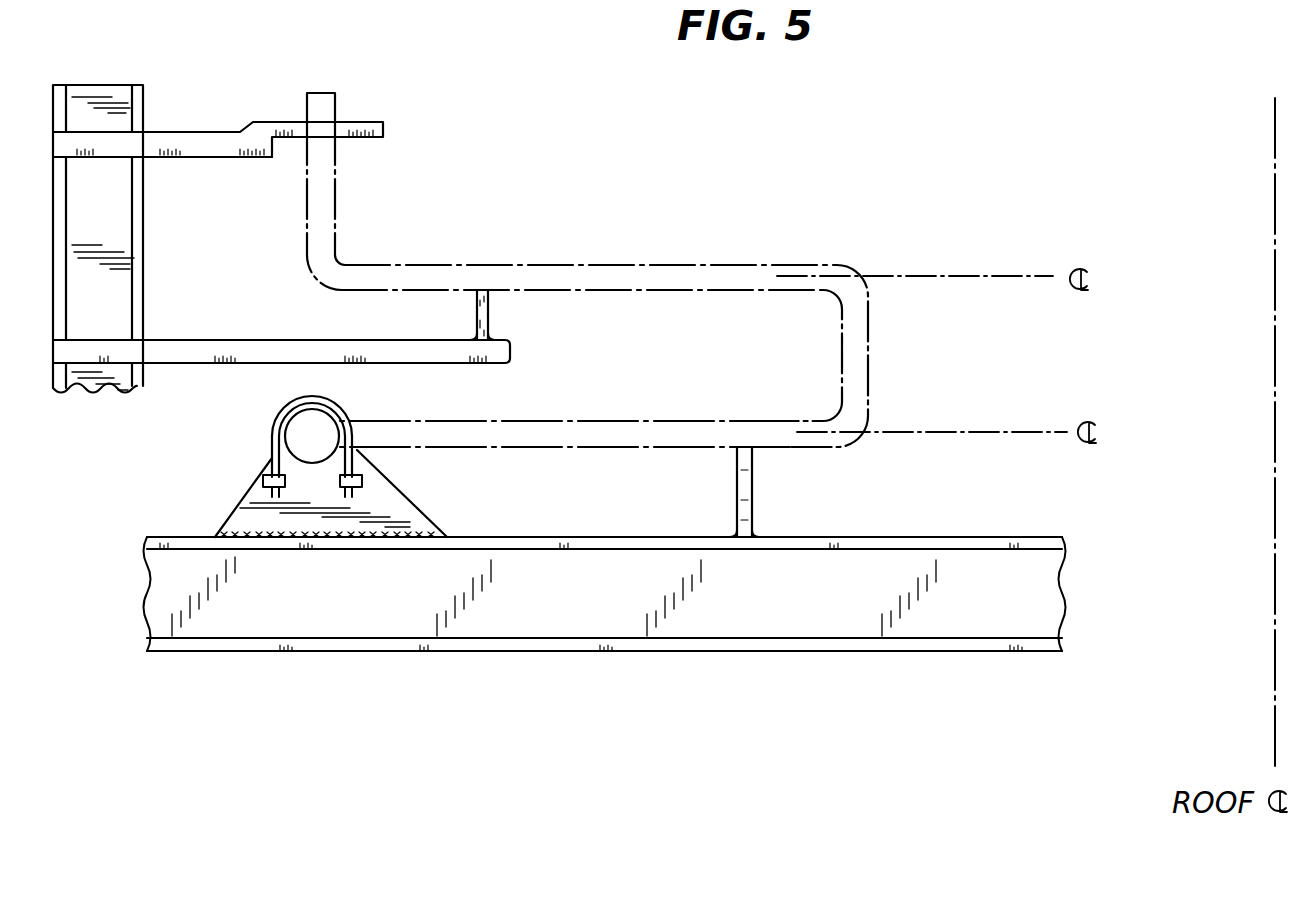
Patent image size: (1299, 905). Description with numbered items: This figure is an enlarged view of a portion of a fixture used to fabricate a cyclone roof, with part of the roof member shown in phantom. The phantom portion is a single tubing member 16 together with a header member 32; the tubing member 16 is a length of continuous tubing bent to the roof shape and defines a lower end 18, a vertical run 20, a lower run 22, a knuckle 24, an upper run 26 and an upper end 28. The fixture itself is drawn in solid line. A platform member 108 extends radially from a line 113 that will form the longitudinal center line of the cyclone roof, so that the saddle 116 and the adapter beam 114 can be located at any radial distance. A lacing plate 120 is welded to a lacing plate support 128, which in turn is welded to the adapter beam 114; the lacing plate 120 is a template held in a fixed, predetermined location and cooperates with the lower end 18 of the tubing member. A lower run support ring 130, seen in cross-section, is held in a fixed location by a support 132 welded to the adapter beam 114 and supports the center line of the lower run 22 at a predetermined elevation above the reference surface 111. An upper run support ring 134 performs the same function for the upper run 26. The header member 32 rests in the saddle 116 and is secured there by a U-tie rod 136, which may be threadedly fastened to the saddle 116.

The tubing member 16 is at (632, 247).
The lower end 18 is at (320, 93).
The vertical run 20 is at (328, 210).
The lower run 22 is at (627, 283).
The knuckle 24 is at (862, 348).
The upper run 26 is at (787, 432).
The upper end 28 is at (373, 420).
The header member 32 is at (307, 440).
The platform member 108 is at (605, 570).
The reference surface 111 is at (942, 535).
The line 113 is at (1275, 722).
The adapter beam 114 is at (117, 93).
The saddle 116 is at (240, 518).
The lacing plate 120 is at (384, 122).
The lacing plate support 128 is at (196, 158).
The lower run support ring 130 is at (490, 312).
The support 132 is at (248, 338).
The upper run support ring 134 is at (737, 500).
The U-tie rod 136 is at (282, 413).